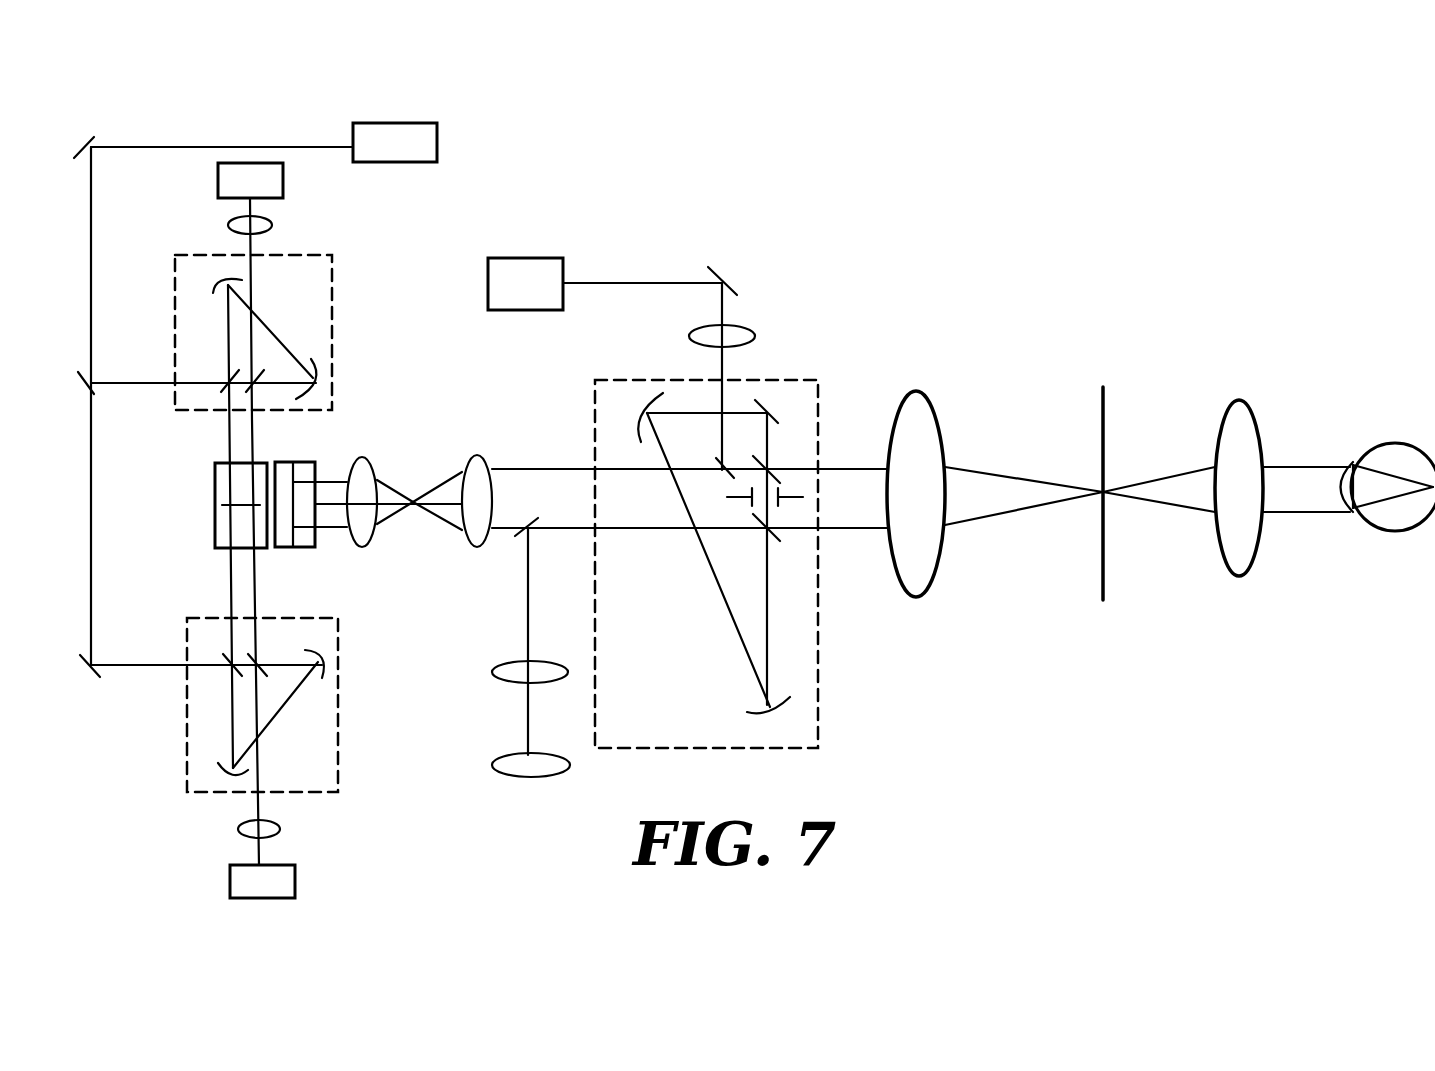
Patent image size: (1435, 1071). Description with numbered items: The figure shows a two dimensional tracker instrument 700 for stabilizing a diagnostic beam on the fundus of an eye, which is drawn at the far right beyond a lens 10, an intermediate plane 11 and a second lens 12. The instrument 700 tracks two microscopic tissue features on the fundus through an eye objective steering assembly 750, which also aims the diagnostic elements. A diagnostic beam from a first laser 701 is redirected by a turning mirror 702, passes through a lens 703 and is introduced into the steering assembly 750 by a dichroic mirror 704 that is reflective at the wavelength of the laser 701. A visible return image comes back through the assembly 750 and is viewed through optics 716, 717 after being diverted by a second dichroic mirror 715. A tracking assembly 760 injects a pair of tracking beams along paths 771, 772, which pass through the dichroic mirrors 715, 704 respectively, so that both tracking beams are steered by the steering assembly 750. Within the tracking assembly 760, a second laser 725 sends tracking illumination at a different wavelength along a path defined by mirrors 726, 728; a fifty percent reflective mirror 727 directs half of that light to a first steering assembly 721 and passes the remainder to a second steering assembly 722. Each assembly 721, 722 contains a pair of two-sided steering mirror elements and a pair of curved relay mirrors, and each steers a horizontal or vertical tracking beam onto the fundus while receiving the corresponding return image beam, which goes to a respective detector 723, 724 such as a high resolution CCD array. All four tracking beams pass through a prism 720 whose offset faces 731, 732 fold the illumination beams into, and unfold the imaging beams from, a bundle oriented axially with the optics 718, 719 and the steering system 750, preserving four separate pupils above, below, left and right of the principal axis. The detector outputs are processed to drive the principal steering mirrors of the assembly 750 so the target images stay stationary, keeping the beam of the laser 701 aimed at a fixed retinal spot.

The instrument 700 is at (631, 193).
The first laser 701 is at (520, 258).
The turning mirror 702 is at (722, 270).
The lens 703 is at (745, 328).
The dichroic mirror 704 is at (720, 465).
The eye objective steering assembly 750 is at (676, 695).
The tracking assembly 760 is at (398, 374).
The path 771 is at (514, 527).
The path 772 is at (540, 468).
The second dichroic mirror 715 is at (520, 541).
The optics 716 is at (500, 665).
The optics 717 is at (505, 756).
The optics 718 is at (478, 455).
The optics 719 is at (362, 457).
The prism 720 is at (217, 462).
The offset face 731 is at (215, 497).
The offset face 732 is at (215, 513).
The first steering assembly 721 is at (301, 300).
The second steering assembly 722 is at (325, 760).
The detector 723 is at (283, 183).
The detector 724 is at (295, 868).
The second laser 725 is at (412, 123).
The mirror 726 is at (93, 140).
The fifty percent reflective mirror 727 is at (93, 393).
The mirror 728 is at (98, 677).
The lens 10 is at (918, 392).
The image plane 11 is at (1103, 396).
The lens 12 is at (1243, 400).